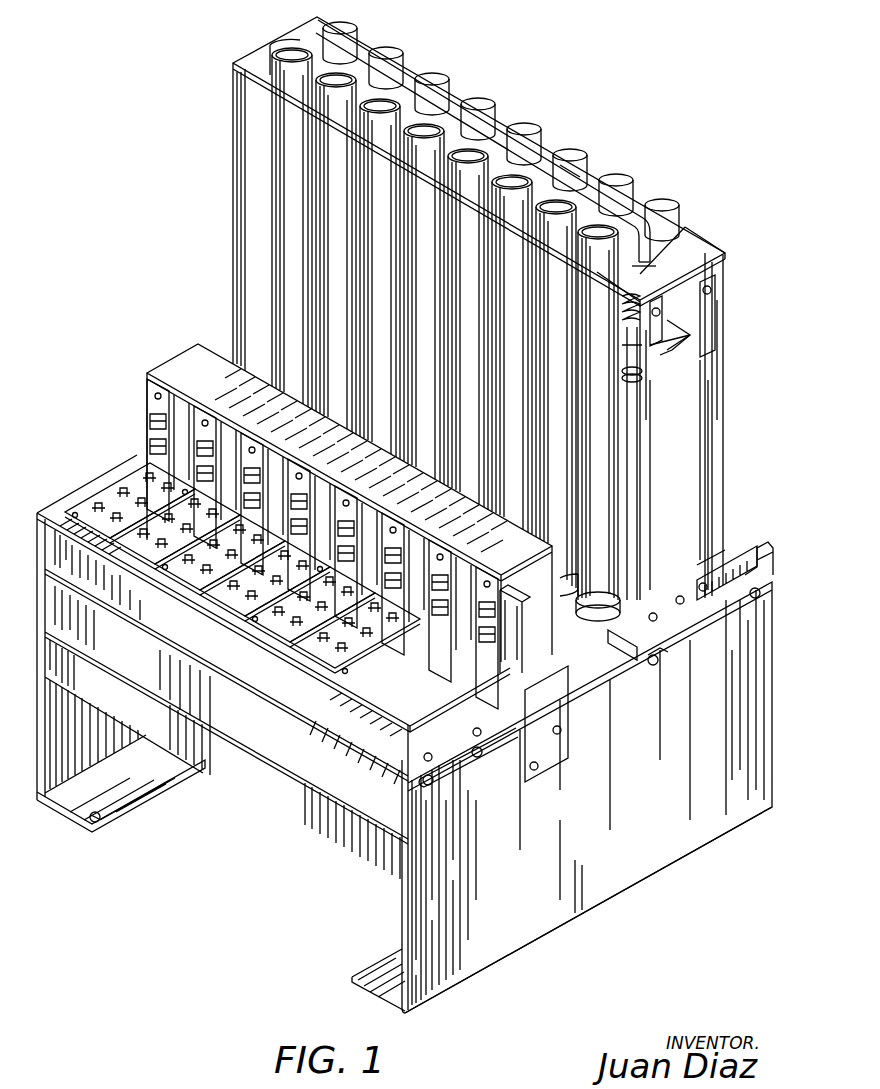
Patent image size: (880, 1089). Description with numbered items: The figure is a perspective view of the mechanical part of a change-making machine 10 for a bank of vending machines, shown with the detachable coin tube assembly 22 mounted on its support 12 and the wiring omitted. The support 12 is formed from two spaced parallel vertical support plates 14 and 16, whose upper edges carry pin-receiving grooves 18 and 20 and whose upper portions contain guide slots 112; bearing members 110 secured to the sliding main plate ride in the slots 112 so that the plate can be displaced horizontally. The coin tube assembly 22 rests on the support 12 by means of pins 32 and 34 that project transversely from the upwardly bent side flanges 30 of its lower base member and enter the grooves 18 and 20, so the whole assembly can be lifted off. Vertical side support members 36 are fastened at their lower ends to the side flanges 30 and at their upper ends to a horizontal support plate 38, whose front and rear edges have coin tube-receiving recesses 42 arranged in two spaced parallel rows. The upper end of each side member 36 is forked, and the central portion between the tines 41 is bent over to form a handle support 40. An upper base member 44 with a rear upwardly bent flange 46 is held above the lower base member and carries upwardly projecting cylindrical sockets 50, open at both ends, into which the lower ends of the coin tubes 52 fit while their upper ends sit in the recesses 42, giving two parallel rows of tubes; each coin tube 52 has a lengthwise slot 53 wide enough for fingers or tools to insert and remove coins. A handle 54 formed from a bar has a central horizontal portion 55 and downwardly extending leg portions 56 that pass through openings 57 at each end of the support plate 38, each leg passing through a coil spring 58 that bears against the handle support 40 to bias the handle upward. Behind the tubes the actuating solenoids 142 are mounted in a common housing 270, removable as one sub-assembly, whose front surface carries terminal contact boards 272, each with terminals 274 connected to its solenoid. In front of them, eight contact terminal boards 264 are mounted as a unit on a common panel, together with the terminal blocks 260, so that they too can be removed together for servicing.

The change-making machine 10 is at (134, 281).
The support 12 is at (605, 937).
The vertical support plate 14 is at (593, 823).
The vertical support plate 16 is at (85, 742).
The pin-receiving groove 18 is at (762, 563).
The pin-receiving groove 20 is at (640, 641).
The coin tube assembly 22 is at (708, 221).
The side flange 30 is at (762, 548).
The pin 32 is at (653, 664).
The pin 34 is at (761, 595).
The vertical side support member 36 is at (692, 466).
The horizontal support plate 38 is at (694, 248).
The handle support 40 is at (672, 336).
The tine 41 is at (714, 300).
The coin tube-receiving recess 42 is at (620, 283).
The upper base member 44 is at (730, 560).
The rear flange 46 is at (718, 545).
The cylindrical socket 50 is at (585, 597).
The coin tube 52 is at (310, 258).
The slot 53 is at (290, 62).
The handle 54 is at (535, 135).
The central horizontal portion 55 is at (566, 167).
The leg portion 56 is at (653, 256).
The opening 57 is at (645, 268).
The coil spring 58 is at (646, 322).
The bearing member 110 is at (476, 758).
The slot 112 is at (514, 745).
The actuating solenoid 142 is at (519, 655).
The terminal block 260 is at (312, 592).
The contact terminal board 264 is at (70, 516).
The housing 270 is at (330, 440).
The terminal contact board 272 is at (146, 388).
The terminal 274 is at (150, 424).